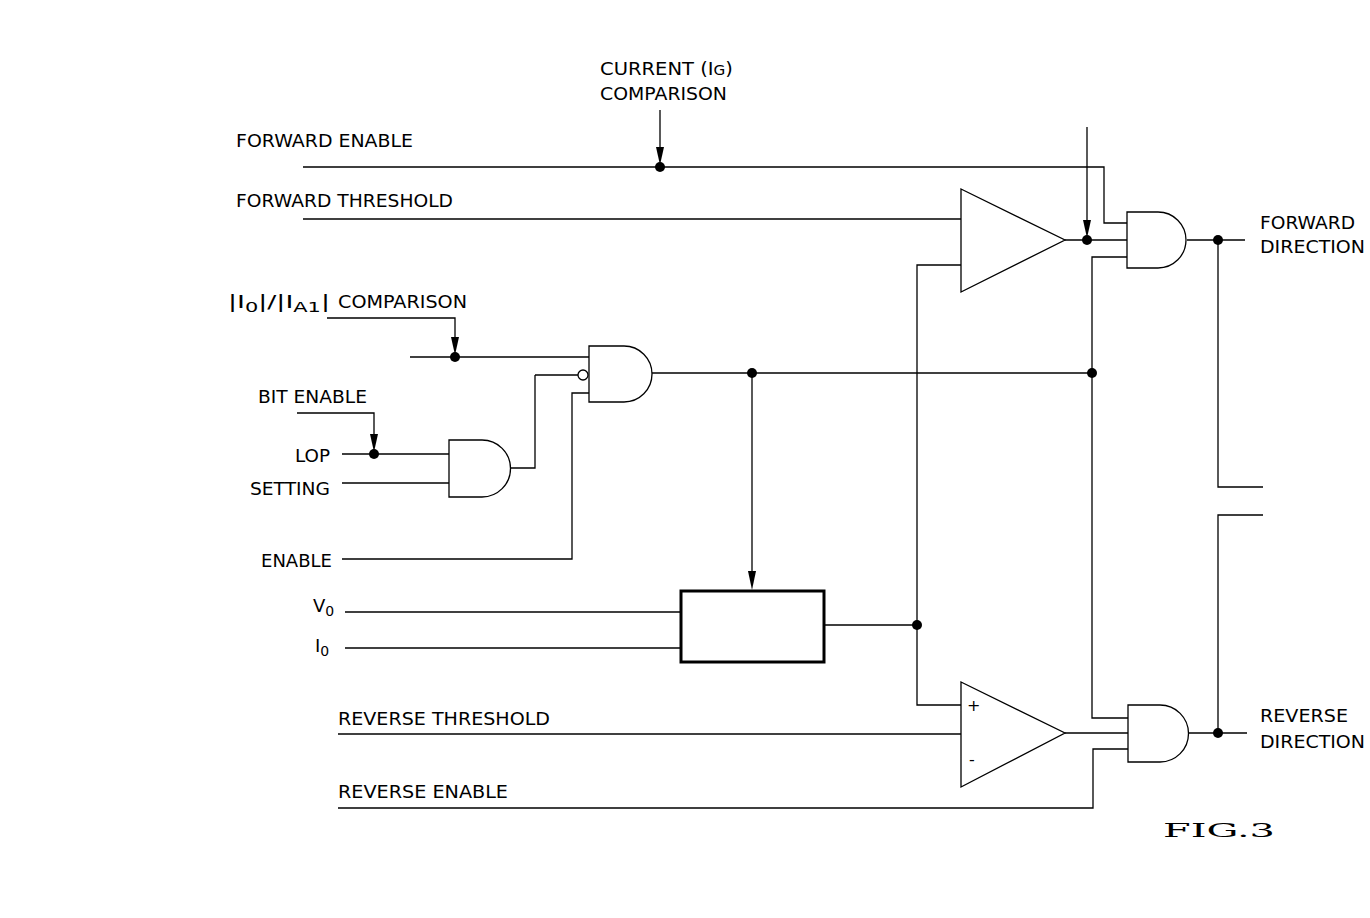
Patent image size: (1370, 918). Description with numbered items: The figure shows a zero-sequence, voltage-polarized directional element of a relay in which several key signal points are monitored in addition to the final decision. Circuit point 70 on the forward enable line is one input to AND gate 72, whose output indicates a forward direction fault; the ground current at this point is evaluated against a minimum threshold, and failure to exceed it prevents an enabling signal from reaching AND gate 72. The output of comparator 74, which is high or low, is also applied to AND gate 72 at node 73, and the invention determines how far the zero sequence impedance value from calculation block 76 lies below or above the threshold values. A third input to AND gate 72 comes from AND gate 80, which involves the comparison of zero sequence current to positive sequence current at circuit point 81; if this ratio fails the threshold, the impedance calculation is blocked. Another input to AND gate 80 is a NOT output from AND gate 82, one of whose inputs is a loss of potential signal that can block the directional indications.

The circuit point 70 is at (665, 163).
The AND gate 72 is at (1148, 212).
The comparator output node 73 is at (1087, 174).
The comparator 74 is at (1031, 260).
The calculation block 76 is at (768, 591).
The AND gate 80 is at (640, 345).
The circuit point 81 is at (460, 353).
The AND gate 82 is at (507, 480).